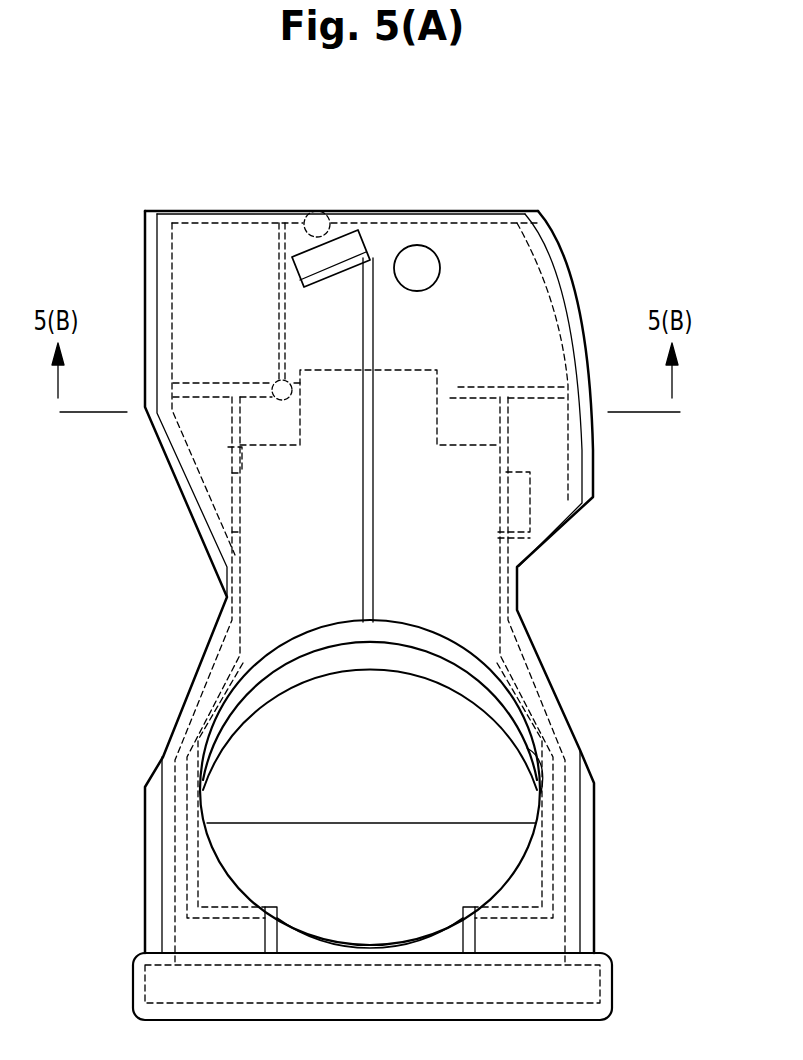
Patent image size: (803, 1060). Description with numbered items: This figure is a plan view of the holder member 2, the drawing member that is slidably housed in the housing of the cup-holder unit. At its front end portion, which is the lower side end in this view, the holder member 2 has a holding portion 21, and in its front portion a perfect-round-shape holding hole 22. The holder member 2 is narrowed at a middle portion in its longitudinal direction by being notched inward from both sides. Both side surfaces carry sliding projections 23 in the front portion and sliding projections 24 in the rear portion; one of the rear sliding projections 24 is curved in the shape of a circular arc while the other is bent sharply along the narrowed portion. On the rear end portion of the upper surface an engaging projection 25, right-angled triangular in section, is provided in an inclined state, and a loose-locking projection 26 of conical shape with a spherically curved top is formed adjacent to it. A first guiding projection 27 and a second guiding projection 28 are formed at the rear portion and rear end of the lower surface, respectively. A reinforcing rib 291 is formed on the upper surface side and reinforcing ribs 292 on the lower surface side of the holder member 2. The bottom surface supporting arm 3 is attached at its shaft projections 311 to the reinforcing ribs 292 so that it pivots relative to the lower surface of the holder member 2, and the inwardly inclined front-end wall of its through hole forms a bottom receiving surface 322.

The holder member 2 is at (573, 184).
The holding portion 21 is at (482, 1013).
The holding hole 22 is at (553, 736).
The sliding projection 23 is at (145, 845).
The sliding projection 24 is at (162, 450).
The engaging projection 25 is at (349, 232).
The loose-locking projection 26 is at (434, 245).
The first guiding projection 27 is at (272, 384).
The second guiding projection 28 is at (310, 212).
The reinforcing rib 291 is at (363, 568).
The reinforcing rib 292 is at (232, 445).
The bottom surface supporting arm 3 is at (457, 593).
The shaft projection 311 is at (235, 463).
The bottom receiving surface 322 is at (262, 840).